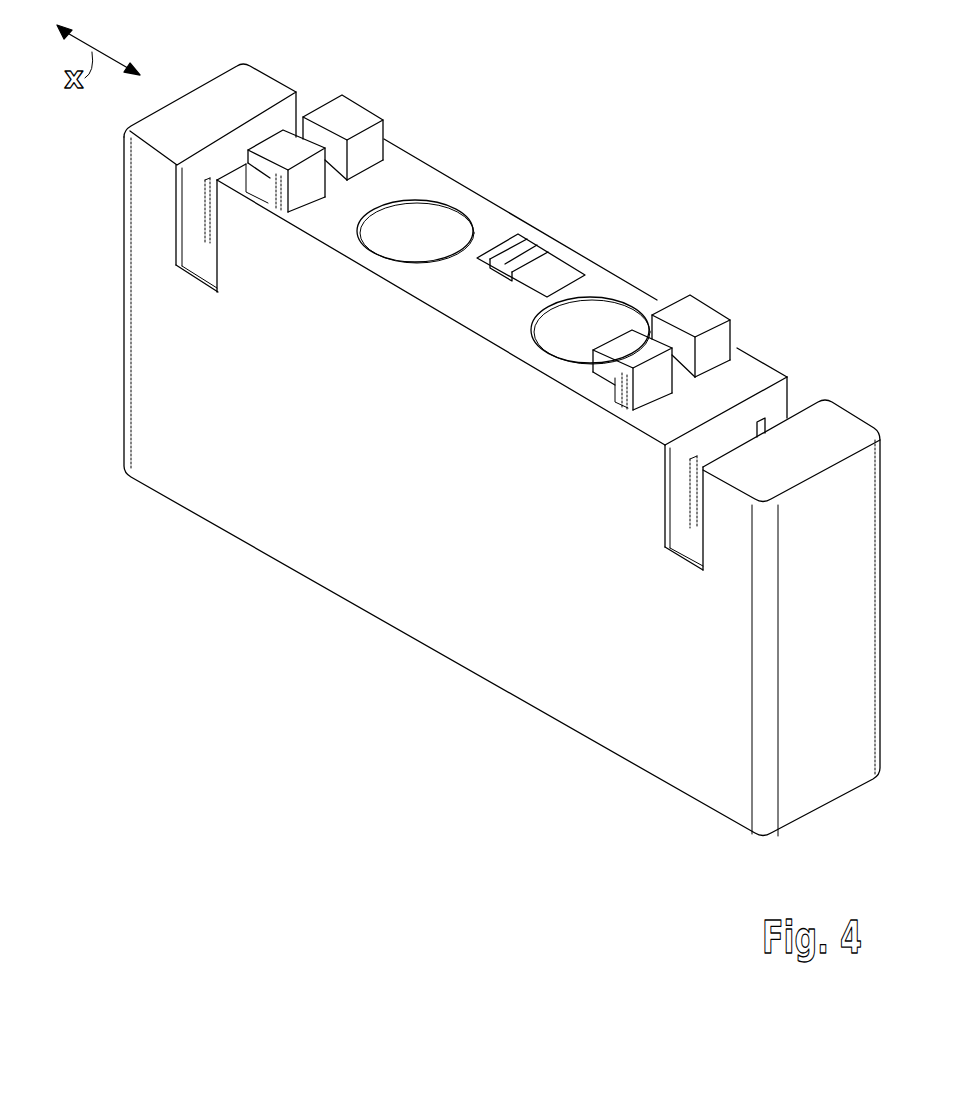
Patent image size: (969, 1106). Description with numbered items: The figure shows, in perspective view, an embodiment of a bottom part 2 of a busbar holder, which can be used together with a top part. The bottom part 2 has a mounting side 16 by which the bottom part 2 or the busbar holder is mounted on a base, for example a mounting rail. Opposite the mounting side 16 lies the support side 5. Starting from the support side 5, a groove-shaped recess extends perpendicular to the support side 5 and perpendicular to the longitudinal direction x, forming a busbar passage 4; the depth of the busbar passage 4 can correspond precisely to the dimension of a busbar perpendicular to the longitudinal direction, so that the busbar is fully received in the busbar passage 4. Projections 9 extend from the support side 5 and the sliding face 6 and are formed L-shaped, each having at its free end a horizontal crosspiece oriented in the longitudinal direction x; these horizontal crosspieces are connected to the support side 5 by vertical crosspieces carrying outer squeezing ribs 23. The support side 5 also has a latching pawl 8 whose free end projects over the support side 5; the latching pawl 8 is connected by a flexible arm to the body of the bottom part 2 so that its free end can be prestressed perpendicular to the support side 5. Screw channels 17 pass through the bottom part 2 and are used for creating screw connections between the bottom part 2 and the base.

The bottom part 2 is at (612, 90).
The busbar passage 4 is at (185, 226).
The support side 5 is at (228, 82).
The sliding face 6 is at (198, 110).
The latching pawl 8 is at (540, 265).
The projection 9 is at (355, 120).
The mounting side 16 is at (284, 580).
The screw channel 17 is at (432, 220).
The squeezing rib 23 is at (203, 204).